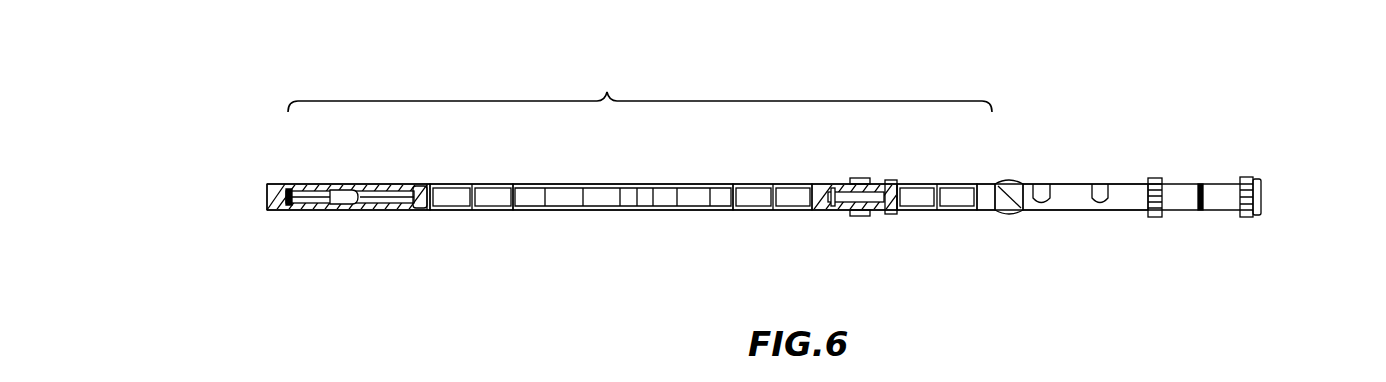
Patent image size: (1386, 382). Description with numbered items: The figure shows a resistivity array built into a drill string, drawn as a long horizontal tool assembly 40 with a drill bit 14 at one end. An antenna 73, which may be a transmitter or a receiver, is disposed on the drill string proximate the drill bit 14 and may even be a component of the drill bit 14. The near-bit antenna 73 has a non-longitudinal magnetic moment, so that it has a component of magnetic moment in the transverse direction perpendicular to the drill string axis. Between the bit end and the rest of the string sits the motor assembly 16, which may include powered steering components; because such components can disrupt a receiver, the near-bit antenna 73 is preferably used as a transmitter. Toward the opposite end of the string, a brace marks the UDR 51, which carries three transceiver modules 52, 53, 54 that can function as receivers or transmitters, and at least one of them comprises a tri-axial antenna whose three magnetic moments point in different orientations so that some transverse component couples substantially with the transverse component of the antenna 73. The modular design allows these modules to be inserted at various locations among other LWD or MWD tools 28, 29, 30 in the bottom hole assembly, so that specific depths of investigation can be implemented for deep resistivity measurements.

The drill bit 14 is at (1262, 192).
The motor assembly 16 is at (1057, 184).
The LWD or MWD tool 28 is at (336, 184).
The LWD or MWD tool 29 is at (557, 184).
The LWD or MWD tool 30 is at (850, 214).
The tool assembly 40 is at (989, 82).
The UDR 51 is at (607, 98).
The transceiver module 52 is at (471, 184).
The transceiver module 53 is at (773, 184).
The transceiver module 54 is at (937, 184).
The antenna 73 is at (1200, 184).